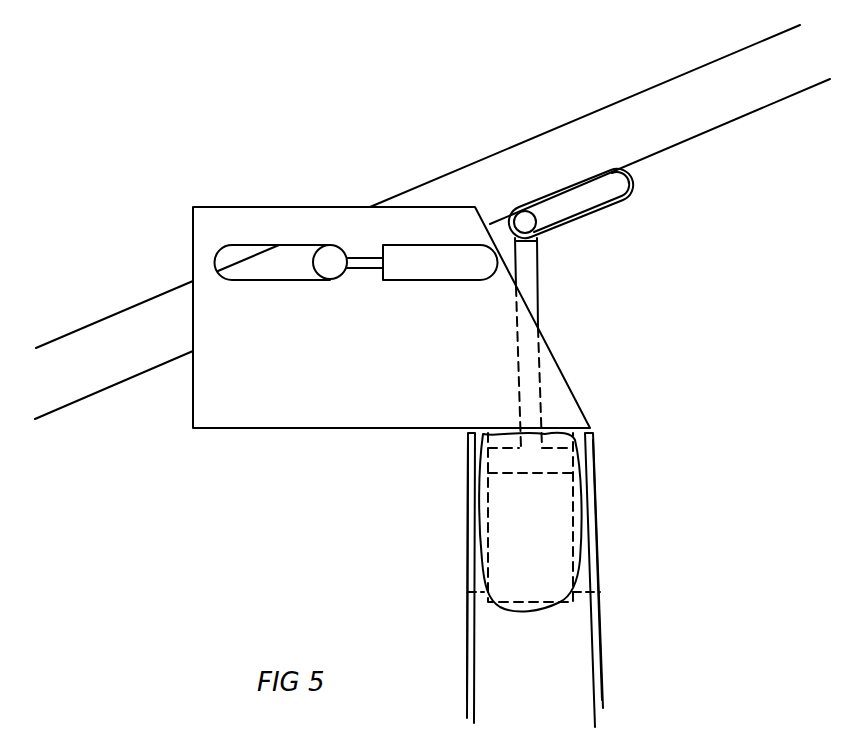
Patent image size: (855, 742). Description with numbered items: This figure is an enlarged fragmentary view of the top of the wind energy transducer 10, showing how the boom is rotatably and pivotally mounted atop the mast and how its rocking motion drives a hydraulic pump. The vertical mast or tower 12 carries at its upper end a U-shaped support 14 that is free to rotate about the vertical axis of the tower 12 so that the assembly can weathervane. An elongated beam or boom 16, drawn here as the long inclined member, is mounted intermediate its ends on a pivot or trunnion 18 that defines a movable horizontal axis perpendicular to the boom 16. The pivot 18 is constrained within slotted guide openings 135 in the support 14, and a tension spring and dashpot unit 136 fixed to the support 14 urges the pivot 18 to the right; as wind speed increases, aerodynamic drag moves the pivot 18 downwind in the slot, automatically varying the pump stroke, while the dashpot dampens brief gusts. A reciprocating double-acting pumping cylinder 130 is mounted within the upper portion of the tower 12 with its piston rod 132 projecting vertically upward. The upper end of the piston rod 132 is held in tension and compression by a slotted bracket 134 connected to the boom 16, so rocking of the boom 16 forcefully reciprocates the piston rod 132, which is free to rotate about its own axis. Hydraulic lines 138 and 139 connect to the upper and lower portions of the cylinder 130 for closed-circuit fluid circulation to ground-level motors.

The wind energy transducer 10 is at (273, 535).
The mast or tower 12 is at (472, 648).
The support 14 is at (228, 413).
The beam or boom 16 is at (702, 124).
The pivot or trunnion 18 is at (333, 258).
The pumping cylinder 130 is at (552, 523).
The piston rod 132 is at (532, 283).
The slotted bracket 134 is at (633, 185).
The slotted guide openings 135 is at (237, 248).
The tension spring and dashpot unit 136 is at (420, 257).
The hydraulic line 138 is at (592, 592).
The hydraulic line 139 is at (468, 538).